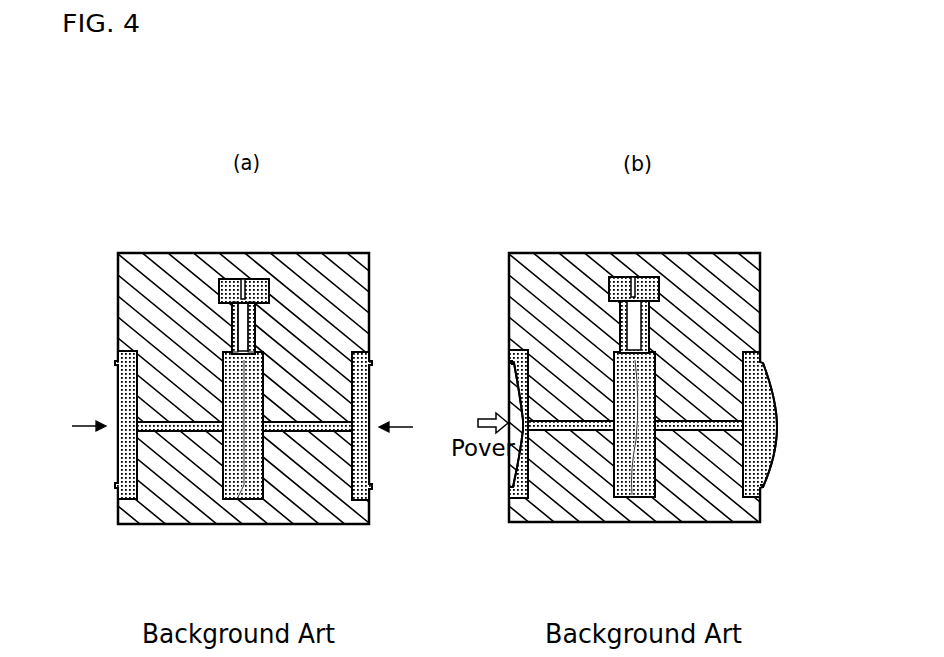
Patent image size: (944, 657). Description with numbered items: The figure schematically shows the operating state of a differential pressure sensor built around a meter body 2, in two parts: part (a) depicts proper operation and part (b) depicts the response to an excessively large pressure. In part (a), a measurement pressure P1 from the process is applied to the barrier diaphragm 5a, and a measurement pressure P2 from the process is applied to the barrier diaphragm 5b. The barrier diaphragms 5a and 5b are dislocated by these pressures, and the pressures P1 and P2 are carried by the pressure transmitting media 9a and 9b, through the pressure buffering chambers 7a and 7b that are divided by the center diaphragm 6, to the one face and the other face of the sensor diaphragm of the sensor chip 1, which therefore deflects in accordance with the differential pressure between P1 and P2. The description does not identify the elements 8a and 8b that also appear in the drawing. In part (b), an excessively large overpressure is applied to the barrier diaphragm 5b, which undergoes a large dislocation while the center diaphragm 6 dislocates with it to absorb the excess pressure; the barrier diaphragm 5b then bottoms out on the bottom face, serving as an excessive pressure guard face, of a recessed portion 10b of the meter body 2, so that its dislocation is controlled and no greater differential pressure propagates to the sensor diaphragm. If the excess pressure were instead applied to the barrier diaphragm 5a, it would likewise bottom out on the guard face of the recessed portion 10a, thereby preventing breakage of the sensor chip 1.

The sensor chip 1 is at (254, 279).
The meter body 2 is at (118, 273).
The barrier diaphragm 5a is at (373, 455).
The barrier diaphragm 5b is at (115, 388).
The center diaphragm 6 is at (233, 498).
The pressure buffering chamber 7a is at (262, 370).
The pressure buffering chamber 7b is at (227, 373).
The right beam 8a is at (313, 431).
The left beam 8b is at (173, 431).
The pressure transmitting medium 9a is at (358, 392).
The pressure transmitting medium 9b is at (115, 445).
The recessed portion 10a is at (770, 472).
The recessed portion 10b is at (510, 358).
The measurement pressure P1 is at (411, 429).
The measurement pressure P2 is at (71, 427).